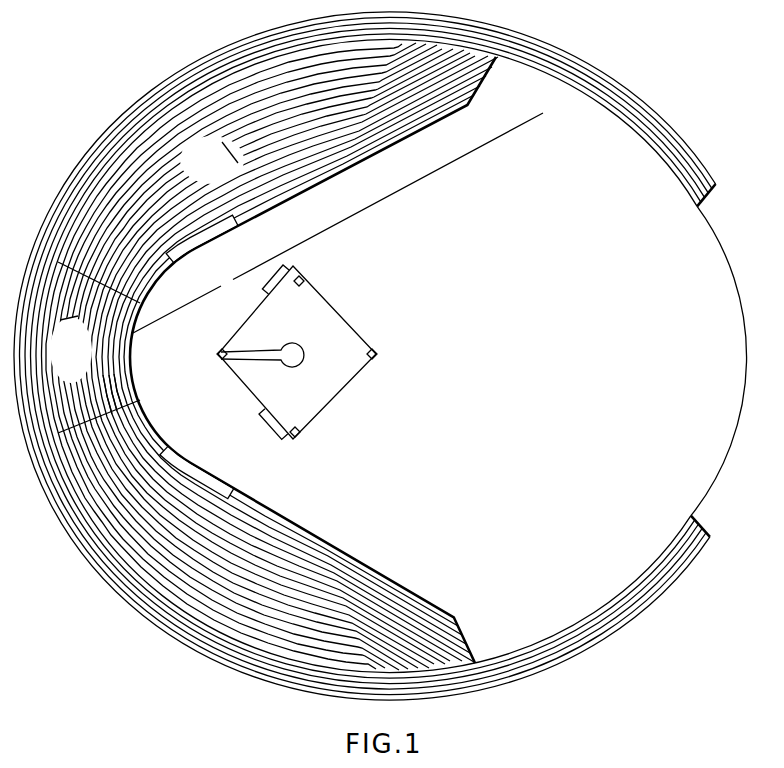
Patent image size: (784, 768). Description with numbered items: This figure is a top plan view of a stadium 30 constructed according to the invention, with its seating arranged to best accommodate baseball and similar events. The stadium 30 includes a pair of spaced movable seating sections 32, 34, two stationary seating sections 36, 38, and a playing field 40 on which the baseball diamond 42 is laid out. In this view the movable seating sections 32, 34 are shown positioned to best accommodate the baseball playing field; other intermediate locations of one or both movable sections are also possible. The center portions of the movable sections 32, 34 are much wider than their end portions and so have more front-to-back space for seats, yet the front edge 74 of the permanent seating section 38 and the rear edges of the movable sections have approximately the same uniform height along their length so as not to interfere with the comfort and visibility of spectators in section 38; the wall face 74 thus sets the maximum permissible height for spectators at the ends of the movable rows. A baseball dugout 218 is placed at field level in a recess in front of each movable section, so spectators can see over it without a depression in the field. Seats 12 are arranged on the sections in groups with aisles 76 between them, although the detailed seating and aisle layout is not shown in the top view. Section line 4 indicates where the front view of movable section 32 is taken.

The stadium 30 is at (129, 613).
The movable seating section 32 is at (125, 167).
The movable seating section 34 is at (109, 531).
The stationary seating section 36 is at (121, 359).
The stationary seating section 38 is at (200, 648).
The playing field 40 is at (612, 360).
The baseball diamond 42 is at (342, 306).
The front edge 74 is at (537, 642).
The aisles 76 is at (123, 396).
The seats 12 is at (228, 146).
The baseball dugout 218 is at (198, 241).
The section line 4- 4 is at (527, 125).